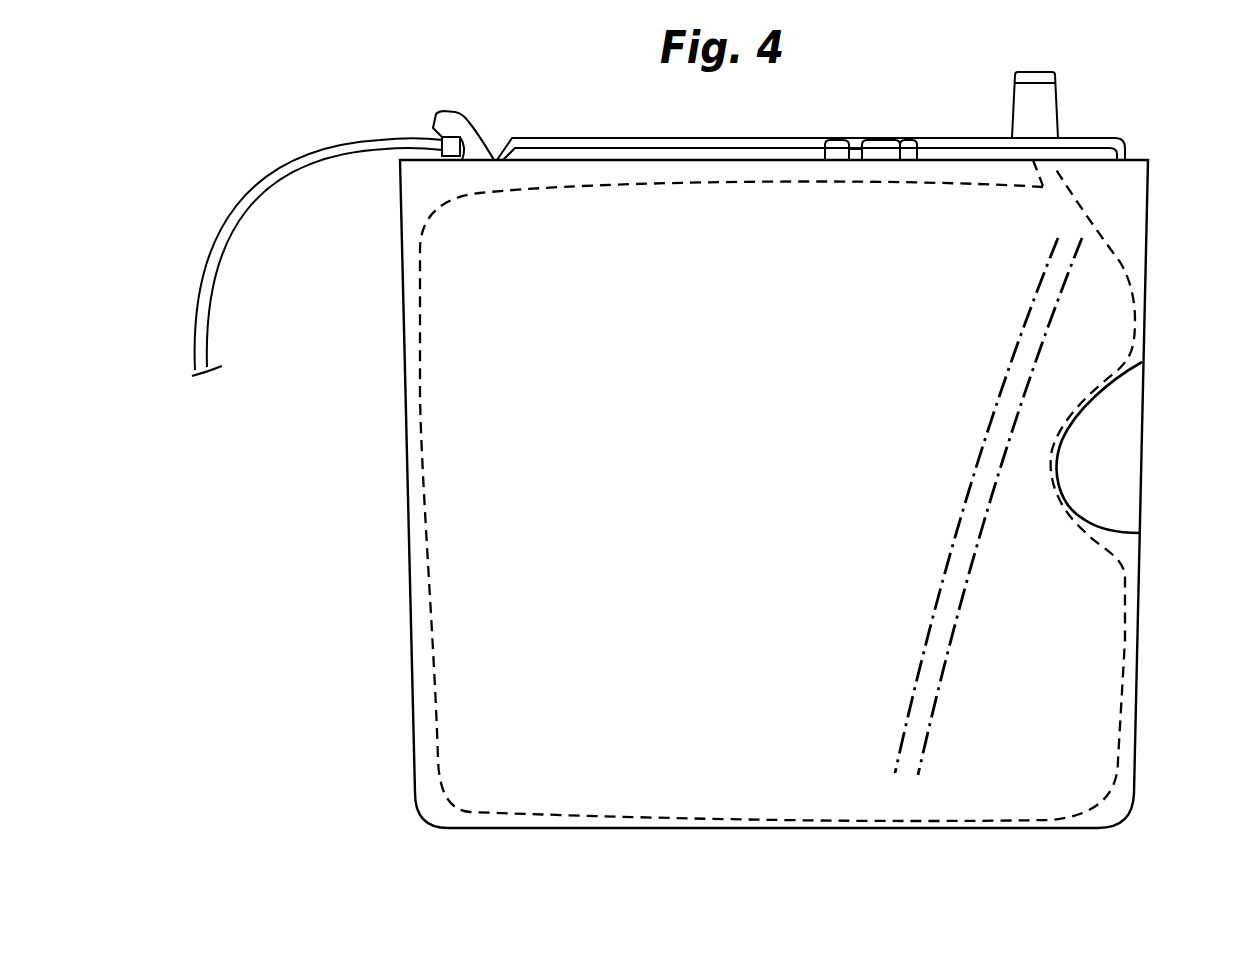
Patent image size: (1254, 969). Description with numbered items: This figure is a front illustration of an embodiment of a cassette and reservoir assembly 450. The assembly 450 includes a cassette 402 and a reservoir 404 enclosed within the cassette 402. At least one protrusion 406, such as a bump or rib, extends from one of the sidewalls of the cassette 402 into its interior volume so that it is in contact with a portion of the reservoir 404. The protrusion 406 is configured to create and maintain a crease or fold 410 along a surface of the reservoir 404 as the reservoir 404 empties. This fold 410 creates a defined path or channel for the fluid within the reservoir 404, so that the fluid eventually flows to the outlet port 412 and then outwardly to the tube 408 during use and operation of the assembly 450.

The cassette 402 is at (1148, 230).
The reservoir 404 is at (1120, 262).
The protrusion 406 is at (1123, 452).
The tube 408 is at (305, 166).
The crease or fold 410 is at (957, 618).
The outlet port 412 is at (1052, 170).
The cassette and reservoir assembly 450 is at (760, 882).